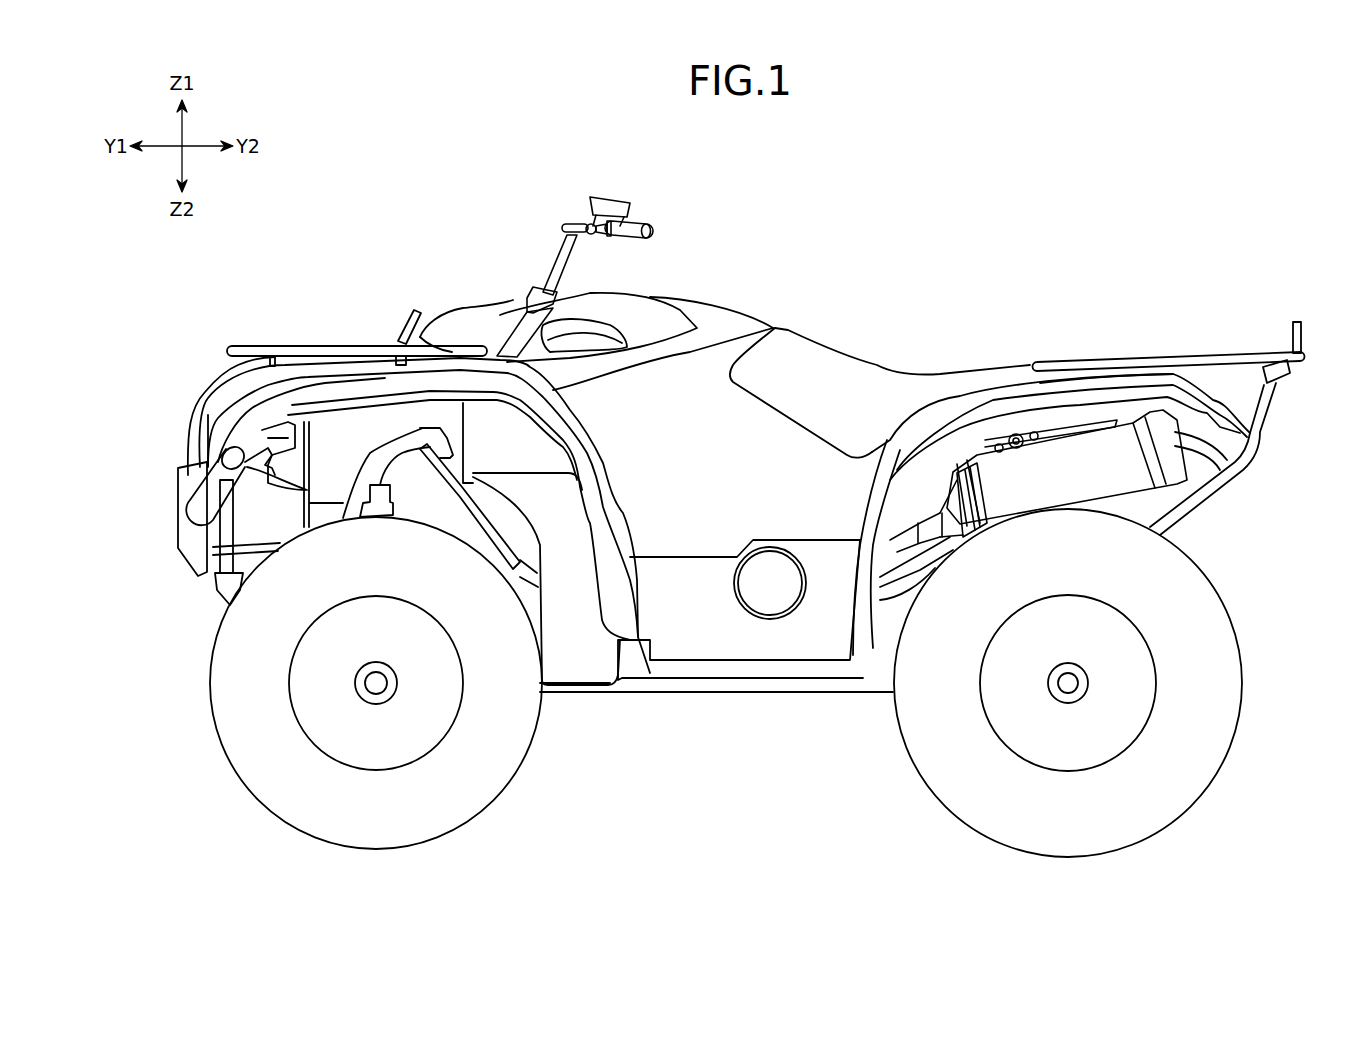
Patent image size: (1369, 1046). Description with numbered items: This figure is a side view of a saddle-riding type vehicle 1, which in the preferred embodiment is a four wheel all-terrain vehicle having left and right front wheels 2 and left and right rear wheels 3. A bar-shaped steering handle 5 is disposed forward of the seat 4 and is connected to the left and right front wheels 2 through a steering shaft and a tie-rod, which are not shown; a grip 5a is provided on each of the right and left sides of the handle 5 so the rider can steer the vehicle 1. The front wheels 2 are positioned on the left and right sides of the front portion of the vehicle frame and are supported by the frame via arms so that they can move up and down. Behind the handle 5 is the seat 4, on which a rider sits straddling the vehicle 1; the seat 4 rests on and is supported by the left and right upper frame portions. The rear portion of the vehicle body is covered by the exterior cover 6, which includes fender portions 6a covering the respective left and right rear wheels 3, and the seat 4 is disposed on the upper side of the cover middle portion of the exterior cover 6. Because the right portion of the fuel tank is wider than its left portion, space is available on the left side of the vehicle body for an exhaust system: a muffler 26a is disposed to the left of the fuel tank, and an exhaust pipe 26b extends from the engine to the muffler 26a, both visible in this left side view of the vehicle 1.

The vehicle 1 is at (832, 207).
The front wheels 2 is at (515, 765).
The rear wheels 3 is at (905, 748).
The seat 4 is at (863, 366).
The steering handle 5 is at (553, 258).
The grip 5a is at (630, 240).
The exterior cover 6 is at (1048, 375).
The fender portions 6a is at (1077, 385).
The muffler 26a is at (1107, 490).
The exhaust pipe 26b is at (898, 545).